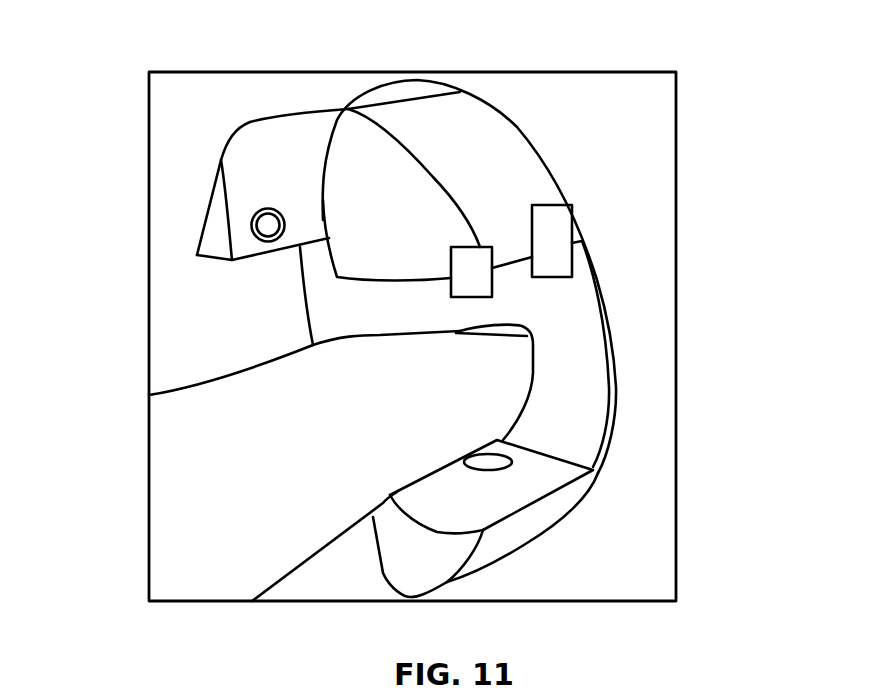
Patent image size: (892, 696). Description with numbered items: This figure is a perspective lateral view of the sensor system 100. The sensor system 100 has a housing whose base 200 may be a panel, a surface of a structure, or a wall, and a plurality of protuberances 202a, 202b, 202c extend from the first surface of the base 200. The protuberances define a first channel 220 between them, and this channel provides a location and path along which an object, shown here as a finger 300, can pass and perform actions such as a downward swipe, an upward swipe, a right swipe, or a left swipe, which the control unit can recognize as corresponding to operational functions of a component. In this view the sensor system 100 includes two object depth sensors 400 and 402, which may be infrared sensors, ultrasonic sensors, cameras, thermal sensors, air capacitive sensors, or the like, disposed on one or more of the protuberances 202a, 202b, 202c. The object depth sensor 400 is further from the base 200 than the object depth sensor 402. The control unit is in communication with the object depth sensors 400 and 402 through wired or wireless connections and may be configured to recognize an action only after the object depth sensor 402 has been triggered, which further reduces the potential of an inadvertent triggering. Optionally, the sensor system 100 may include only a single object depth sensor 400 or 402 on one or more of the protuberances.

The sensor system 100 is at (167, 41).
The base 200 is at (607, 315).
The protuberance 202a is at (212, 170).
The protuberance 202b is at (512, 150).
The protuberance 202c is at (503, 542).
The first channel 220 is at (592, 385).
The finger 300 is at (232, 528).
The object depth sensor 400 is at (480, 247).
The object depth sensor 402 is at (553, 205).